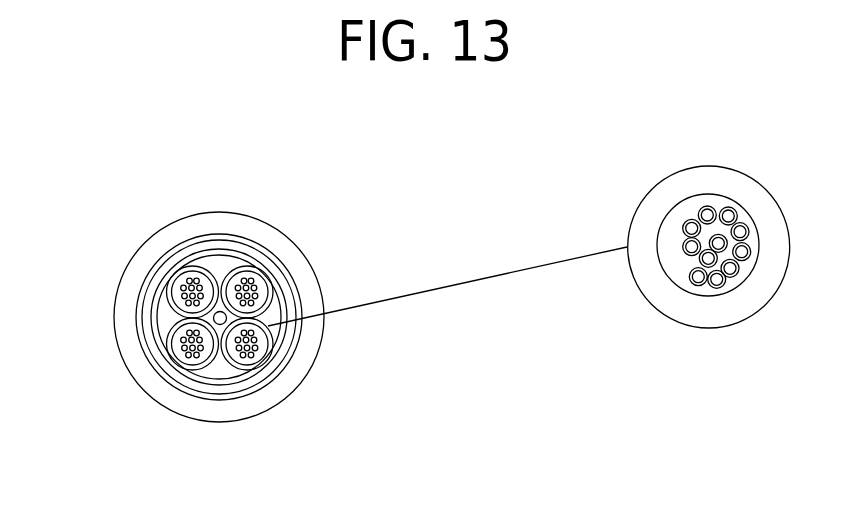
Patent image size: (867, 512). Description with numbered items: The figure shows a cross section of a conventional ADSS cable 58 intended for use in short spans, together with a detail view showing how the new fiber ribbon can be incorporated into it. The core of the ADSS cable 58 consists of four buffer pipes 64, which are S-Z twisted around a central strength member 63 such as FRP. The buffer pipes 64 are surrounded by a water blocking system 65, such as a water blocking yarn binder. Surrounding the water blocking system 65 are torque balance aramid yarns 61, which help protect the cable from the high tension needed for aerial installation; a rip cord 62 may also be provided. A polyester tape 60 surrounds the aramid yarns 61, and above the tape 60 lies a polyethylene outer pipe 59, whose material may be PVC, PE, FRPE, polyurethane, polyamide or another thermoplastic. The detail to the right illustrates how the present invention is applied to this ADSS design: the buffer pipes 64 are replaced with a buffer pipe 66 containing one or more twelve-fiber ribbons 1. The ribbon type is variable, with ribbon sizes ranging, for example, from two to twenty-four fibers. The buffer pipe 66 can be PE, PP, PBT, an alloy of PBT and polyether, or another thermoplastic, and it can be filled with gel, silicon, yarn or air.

The ADSS cable 58 is at (80, 298).
The polyethylene outer pipe 59 is at (172, 235).
The polyester tape 60 is at (227, 232).
The torque balance aramid yarns 61 is at (252, 250).
The rip cord 62 is at (291, 268).
The central strength member 63 is at (300, 349).
The buffer pipes 64 is at (266, 360).
The water blocking system 65 is at (211, 384).
The buffer pipe 66 is at (700, 178).
The fiber ribbon 1 is at (709, 236).